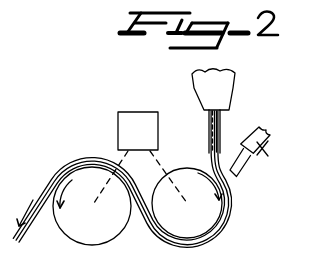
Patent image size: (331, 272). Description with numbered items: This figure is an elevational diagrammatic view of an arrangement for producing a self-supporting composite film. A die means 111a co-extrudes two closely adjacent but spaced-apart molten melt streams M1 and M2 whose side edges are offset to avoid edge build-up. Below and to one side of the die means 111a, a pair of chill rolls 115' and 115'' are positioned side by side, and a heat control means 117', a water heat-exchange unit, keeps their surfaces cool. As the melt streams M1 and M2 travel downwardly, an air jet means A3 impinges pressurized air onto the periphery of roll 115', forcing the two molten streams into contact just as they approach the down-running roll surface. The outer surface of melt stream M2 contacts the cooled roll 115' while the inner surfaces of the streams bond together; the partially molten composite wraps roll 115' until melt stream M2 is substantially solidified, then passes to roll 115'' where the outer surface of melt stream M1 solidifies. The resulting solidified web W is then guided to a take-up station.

The composite web W is at (28, 238).
The melt stream M1 is at (223, 126).
The melt stream M2 is at (208, 138).
The die means 111a is at (239, 87).
The air jet means A3 is at (267, 152).
The heat control means 117' is at (127, 159).
The chill roll 115'' is at (92, 211).
The chill roll 115' is at (203, 214).